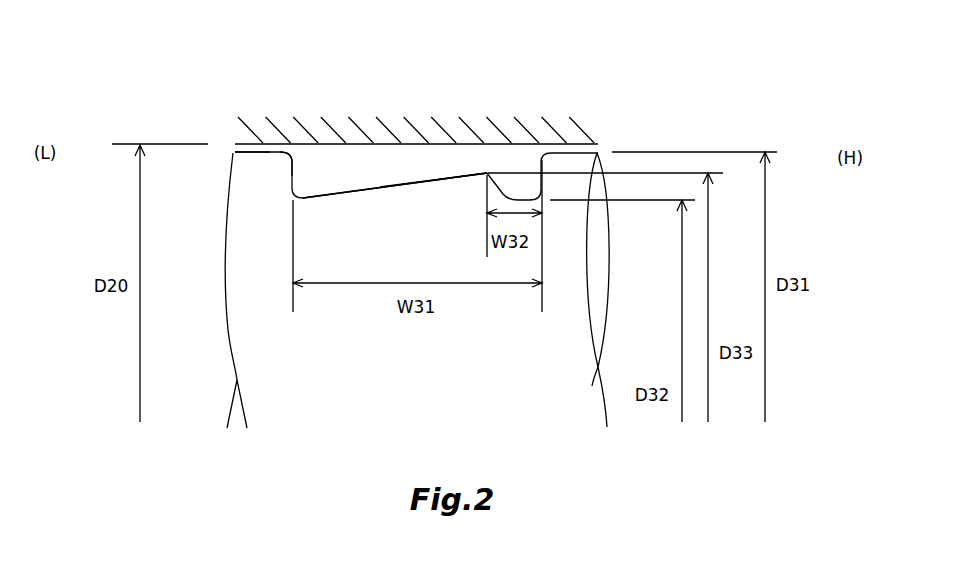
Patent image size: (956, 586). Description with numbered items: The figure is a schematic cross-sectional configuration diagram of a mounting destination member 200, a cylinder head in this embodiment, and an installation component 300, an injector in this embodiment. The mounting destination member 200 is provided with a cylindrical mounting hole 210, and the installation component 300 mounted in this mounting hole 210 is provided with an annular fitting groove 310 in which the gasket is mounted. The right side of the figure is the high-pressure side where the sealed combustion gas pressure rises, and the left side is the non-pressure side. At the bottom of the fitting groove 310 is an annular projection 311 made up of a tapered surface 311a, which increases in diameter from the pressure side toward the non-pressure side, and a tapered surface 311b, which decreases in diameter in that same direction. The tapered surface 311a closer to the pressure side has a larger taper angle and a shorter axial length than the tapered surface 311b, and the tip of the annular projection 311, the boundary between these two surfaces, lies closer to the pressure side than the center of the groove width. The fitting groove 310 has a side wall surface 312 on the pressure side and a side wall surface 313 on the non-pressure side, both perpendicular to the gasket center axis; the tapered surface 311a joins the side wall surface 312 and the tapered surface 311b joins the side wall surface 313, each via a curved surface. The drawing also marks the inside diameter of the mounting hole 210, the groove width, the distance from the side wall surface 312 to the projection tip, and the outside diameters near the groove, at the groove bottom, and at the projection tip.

The mounting destination member 200 is at (416, 115).
The installation component 300 is at (338, 290).
The mounting hole 210 is at (272, 150).
The fitting groove 310 is at (389, 180).
The side wall surface 313 is at (296, 160).
The annular projection 311 is at (439, 155).
The tapered surface 311b is at (382, 186).
The tapered surface 311a is at (496, 176).
The side wall surface 312 is at (542, 172).